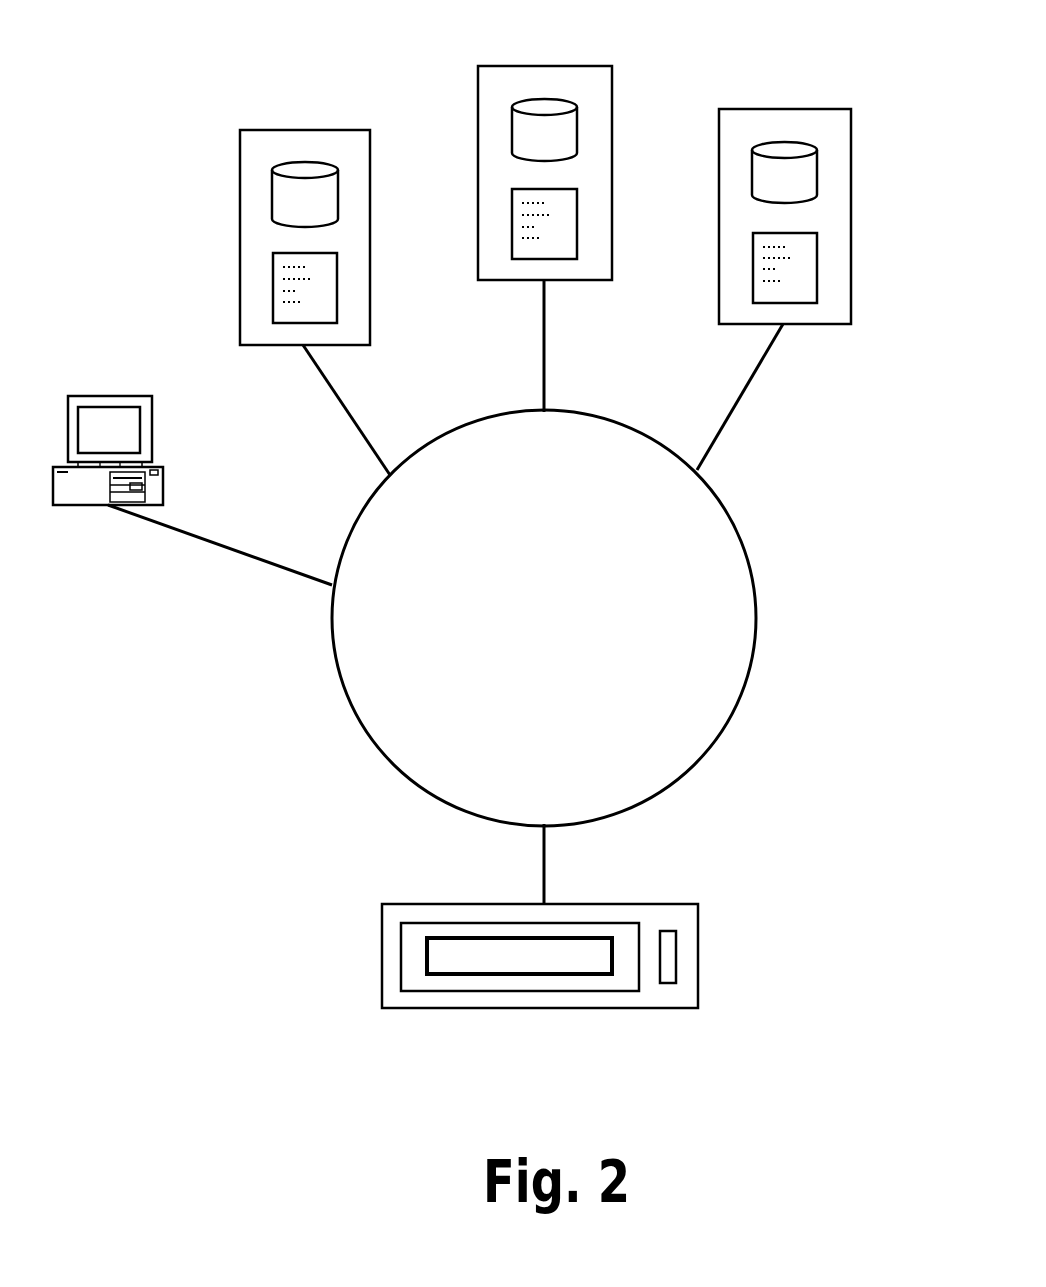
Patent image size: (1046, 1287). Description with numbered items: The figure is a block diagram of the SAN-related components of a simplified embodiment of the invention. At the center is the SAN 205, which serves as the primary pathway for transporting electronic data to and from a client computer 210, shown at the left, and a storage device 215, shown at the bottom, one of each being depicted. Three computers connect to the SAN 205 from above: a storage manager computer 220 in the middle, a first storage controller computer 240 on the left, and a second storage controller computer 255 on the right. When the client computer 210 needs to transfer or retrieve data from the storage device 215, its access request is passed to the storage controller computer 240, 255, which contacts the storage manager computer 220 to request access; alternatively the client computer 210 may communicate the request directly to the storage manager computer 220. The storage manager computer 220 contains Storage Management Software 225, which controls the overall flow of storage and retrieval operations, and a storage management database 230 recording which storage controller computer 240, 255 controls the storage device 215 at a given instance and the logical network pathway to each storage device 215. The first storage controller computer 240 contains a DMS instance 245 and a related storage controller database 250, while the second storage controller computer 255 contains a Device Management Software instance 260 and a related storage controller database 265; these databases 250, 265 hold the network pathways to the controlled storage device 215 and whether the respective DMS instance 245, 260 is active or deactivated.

The SAN 205 is at (760, 600).
The client computer 210 is at (163, 468).
The storage device 215 is at (700, 942).
The storage manager computer 220 is at (586, 142).
The Storage Management Software 225 is at (578, 213).
The storage management database 230 is at (578, 115).
The first storage controller computer 240 is at (265, 201).
The DMS instance 245 is at (273, 277).
The storage controller database 250 is at (273, 185).
The second storage controller computer 255 is at (832, 182).
The Device Management Software instance 260 is at (818, 260).
The storage controller database 265 is at (818, 170).